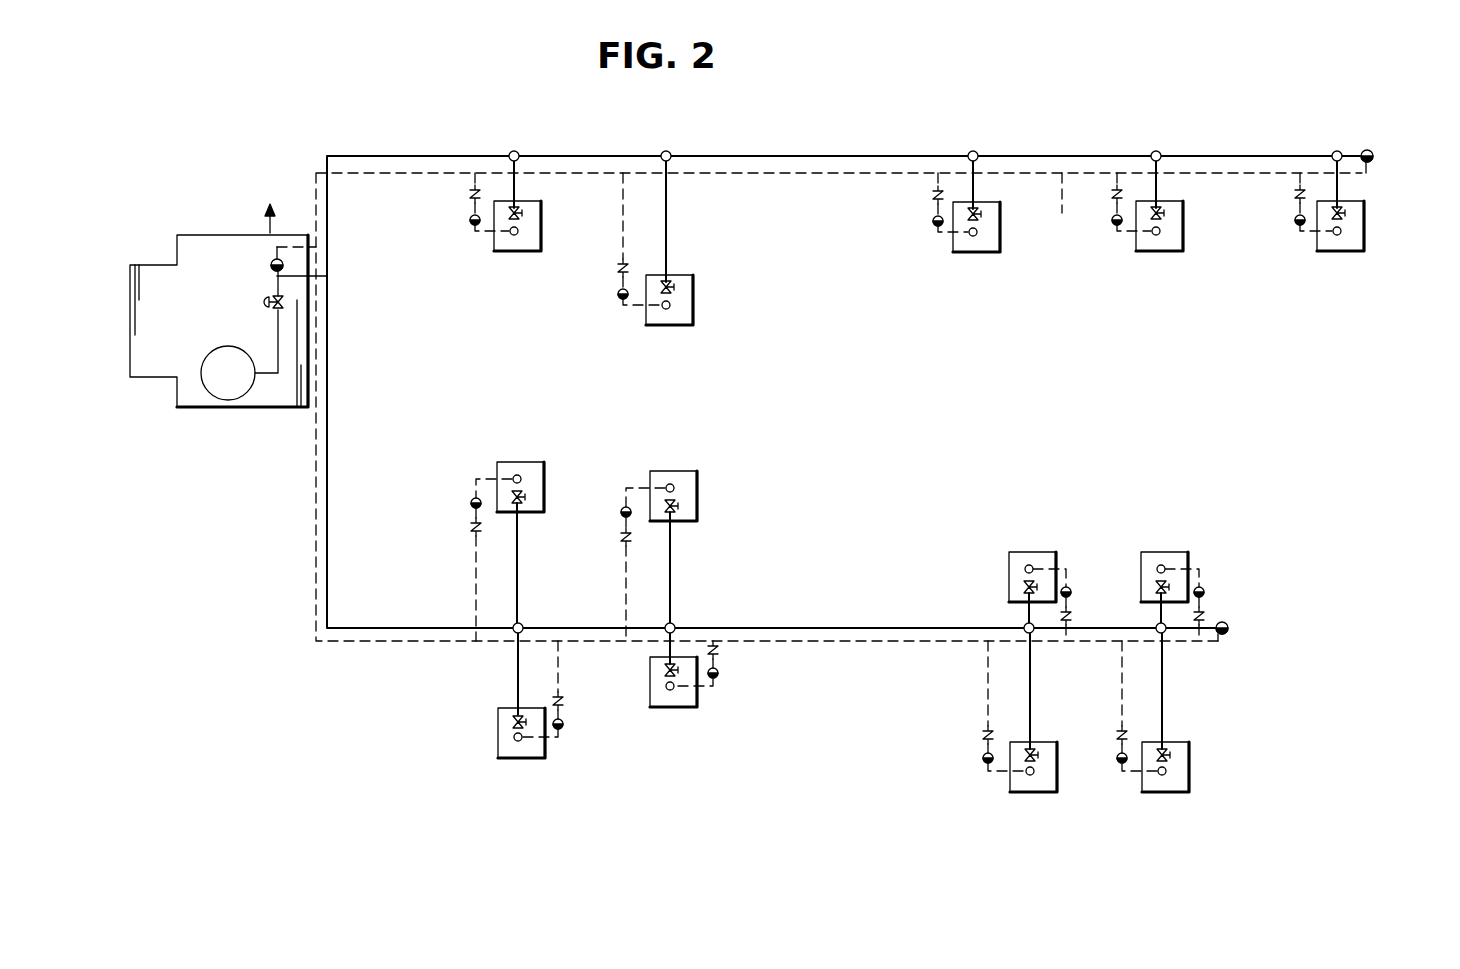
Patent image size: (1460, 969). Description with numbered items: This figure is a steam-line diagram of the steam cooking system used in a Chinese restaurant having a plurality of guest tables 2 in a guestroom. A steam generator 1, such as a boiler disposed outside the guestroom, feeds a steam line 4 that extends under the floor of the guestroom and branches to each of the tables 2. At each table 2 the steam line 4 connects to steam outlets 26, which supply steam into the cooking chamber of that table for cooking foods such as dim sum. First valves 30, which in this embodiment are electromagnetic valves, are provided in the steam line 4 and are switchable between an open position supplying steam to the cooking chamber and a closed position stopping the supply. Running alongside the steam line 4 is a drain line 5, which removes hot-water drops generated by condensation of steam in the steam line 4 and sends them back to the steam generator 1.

The steam generator 1 is at (215, 395).
The guest table 2 is at (533, 250).
The steam line 4 is at (846, 155).
The drain line 5 is at (623, 219).
The steam outlet 26 is at (511, 238).
The first valve 30 is at (671, 282).